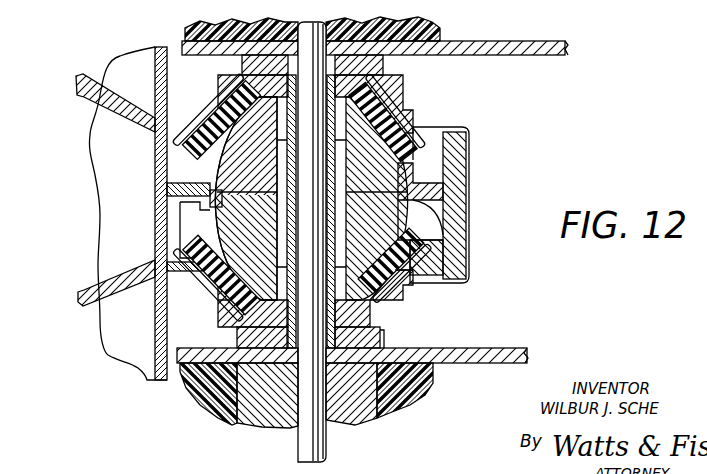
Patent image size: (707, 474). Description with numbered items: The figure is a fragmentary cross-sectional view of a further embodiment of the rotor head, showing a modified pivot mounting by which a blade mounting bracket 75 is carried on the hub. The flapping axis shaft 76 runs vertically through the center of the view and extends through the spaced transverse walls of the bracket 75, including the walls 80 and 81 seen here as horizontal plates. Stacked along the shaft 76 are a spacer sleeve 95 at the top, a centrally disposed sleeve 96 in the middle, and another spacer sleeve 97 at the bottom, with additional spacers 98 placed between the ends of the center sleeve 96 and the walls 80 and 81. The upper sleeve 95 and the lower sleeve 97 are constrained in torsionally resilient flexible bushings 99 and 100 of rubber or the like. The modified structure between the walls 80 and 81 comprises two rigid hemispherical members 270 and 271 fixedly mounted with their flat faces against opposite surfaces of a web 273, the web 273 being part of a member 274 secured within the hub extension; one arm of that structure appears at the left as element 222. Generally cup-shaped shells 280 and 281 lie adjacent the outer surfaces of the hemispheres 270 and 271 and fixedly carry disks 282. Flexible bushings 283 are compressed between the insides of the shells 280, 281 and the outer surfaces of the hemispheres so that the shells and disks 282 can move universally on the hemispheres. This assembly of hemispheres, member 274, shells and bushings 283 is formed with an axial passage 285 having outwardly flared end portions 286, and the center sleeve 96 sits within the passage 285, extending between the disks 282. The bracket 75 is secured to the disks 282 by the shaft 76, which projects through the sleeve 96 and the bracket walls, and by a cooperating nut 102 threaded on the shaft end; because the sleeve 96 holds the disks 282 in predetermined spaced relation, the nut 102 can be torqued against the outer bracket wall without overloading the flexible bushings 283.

The arm of support plate 222 is at (110, 66).
The flapping axis shaft 76 is at (322, 24).
The spacer sleeve 95 is at (367, 30).
The torsionally resilient flexible bushing 99 is at (425, 33).
The transverse wall of bracket 80 is at (520, 42).
The blade mounting bracket 75 is at (568, 46).
The spacer 98 is at (385, 68).
The outwardly flared end portion 286 is at (400, 108).
The rigid hemispherical member 270 is at (447, 181).
The web 273 is at (455, 224).
The member 274 is at (445, 252).
The rigid hemispherical member 271 is at (407, 278).
The disk 282 is at (218, 100).
The cup-shaped shell 280 is at (175, 138).
The flexible bushing 283 is at (177, 185).
The centrally disposed sleeve 96 is at (280, 175).
The axial passage 285 is at (341, 175).
The cup-shaped shell 281 is at (190, 252).
The nut 102 is at (146, 335).
The torsionally resilient flexible bushing 100 is at (425, 386).
The spacer sleeve 97 is at (353, 407).
The transverse wall of bracket 81 is at (494, 350).